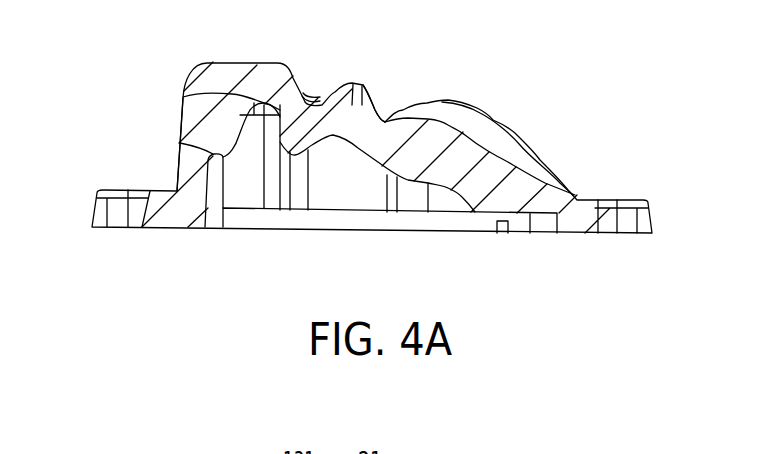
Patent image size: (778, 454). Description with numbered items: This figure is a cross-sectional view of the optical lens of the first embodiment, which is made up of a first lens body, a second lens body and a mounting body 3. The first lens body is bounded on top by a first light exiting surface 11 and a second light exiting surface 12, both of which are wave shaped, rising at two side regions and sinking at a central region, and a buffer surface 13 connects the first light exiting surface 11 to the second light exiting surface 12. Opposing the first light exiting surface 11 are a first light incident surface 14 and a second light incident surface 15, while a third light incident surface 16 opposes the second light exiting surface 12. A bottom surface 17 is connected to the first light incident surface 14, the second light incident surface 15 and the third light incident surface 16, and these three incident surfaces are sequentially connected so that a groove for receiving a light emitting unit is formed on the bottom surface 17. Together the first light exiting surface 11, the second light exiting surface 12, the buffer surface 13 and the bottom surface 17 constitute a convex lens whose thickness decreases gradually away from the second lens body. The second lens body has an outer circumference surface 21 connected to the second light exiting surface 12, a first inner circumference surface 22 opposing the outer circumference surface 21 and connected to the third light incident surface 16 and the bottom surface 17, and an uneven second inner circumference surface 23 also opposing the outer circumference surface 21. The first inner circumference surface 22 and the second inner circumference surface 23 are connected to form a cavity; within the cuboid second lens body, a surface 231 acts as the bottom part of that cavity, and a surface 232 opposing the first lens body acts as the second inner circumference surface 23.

The mounting body 3 is at (657, 209).
The first light exiting surface 11 is at (479, 112).
The second light exiting surface 12 is at (352, 83).
The buffer surface 13 is at (385, 121).
The first light incident surface 14 is at (455, 197).
The second light incident surface 15 is at (397, 212).
The third light incident surface 16 is at (333, 136).
The bottom surface 17 is at (530, 233).
The outer circumference surface 21 is at (246, 62).
The first inner circumference surface 22 is at (283, 229).
The second inner circumference surface 23 is at (66, 77).
The surface acting as bottom part of the cavity 231 is at (183, 97).
The surface acting as second inner circumference surface 232 is at (180, 143).